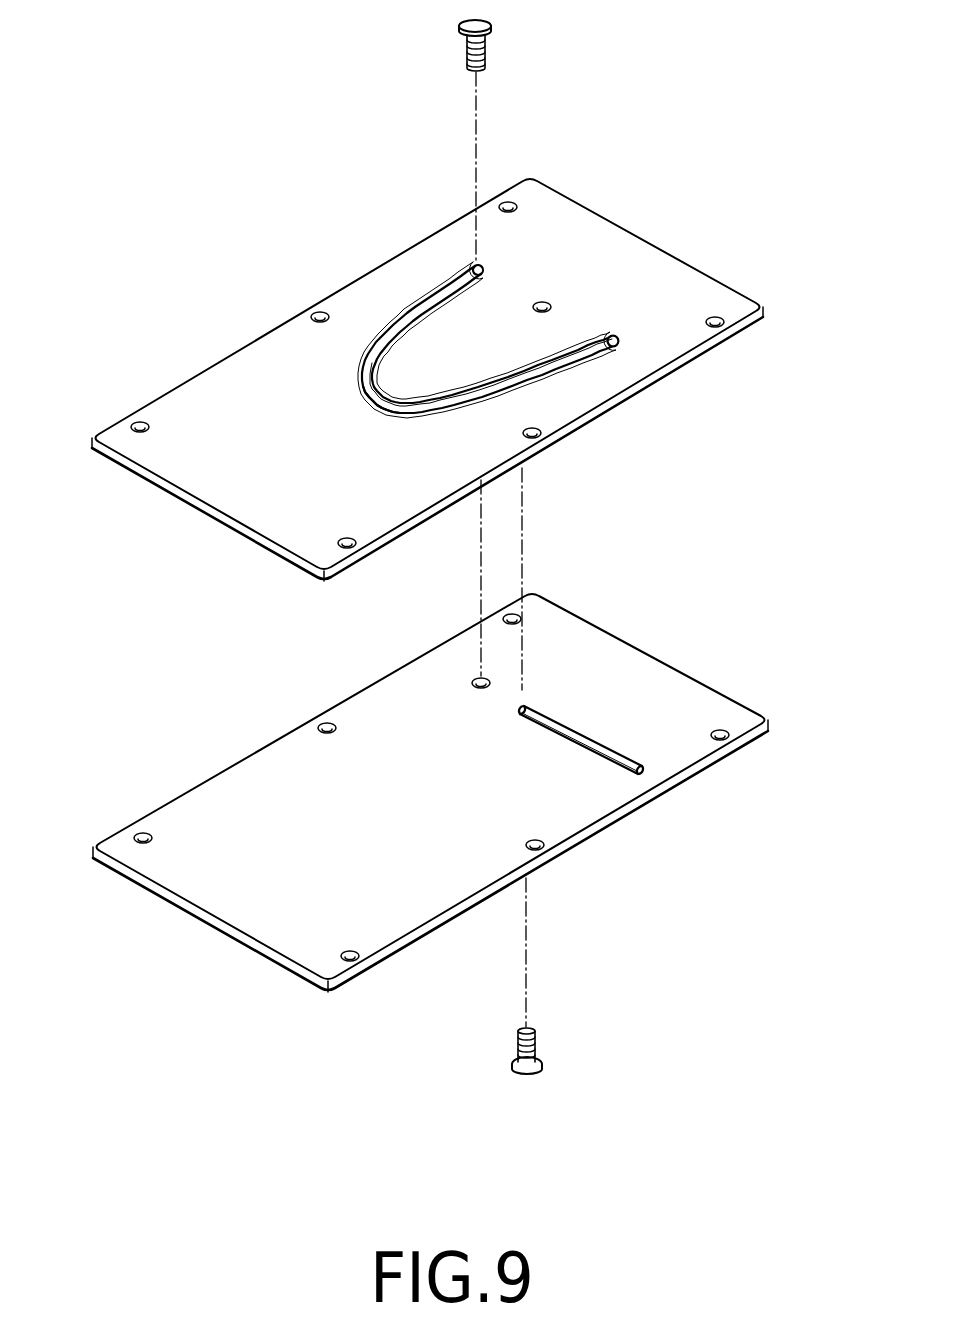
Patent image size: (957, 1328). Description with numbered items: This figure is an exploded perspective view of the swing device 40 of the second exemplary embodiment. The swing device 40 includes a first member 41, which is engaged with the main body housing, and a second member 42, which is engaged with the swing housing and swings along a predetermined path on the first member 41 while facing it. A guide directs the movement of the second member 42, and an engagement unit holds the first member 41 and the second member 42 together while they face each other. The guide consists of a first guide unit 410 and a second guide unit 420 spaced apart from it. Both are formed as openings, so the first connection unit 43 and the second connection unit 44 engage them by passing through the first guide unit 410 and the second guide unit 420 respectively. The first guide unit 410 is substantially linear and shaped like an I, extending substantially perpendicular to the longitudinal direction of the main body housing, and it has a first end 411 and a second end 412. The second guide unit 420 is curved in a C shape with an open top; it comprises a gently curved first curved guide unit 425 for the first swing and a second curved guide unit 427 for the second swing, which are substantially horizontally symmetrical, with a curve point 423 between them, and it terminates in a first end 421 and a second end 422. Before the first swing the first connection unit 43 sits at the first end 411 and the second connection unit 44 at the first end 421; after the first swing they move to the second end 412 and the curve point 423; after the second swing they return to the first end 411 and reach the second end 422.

The swing device 40 is at (219, 68).
The first member 41 is at (576, 875).
The second member 42 is at (250, 316).
The first connection unit 43 is at (538, 1048).
The second connection unit 44 is at (487, 50).
The first guide unit 410 is at (614, 752).
The first end of the first guide unit 411 is at (527, 712).
The second end of the first guide unit 412 is at (648, 776).
The second guide unit 420 is at (348, 378).
The first end of the second guide unit 421 is at (486, 262).
The second end of the second guide unit 422 is at (600, 338).
The curve point 423 is at (367, 403).
The first curved guide unit 425 is at (403, 317).
The second curved guide unit 427 is at (567, 368).